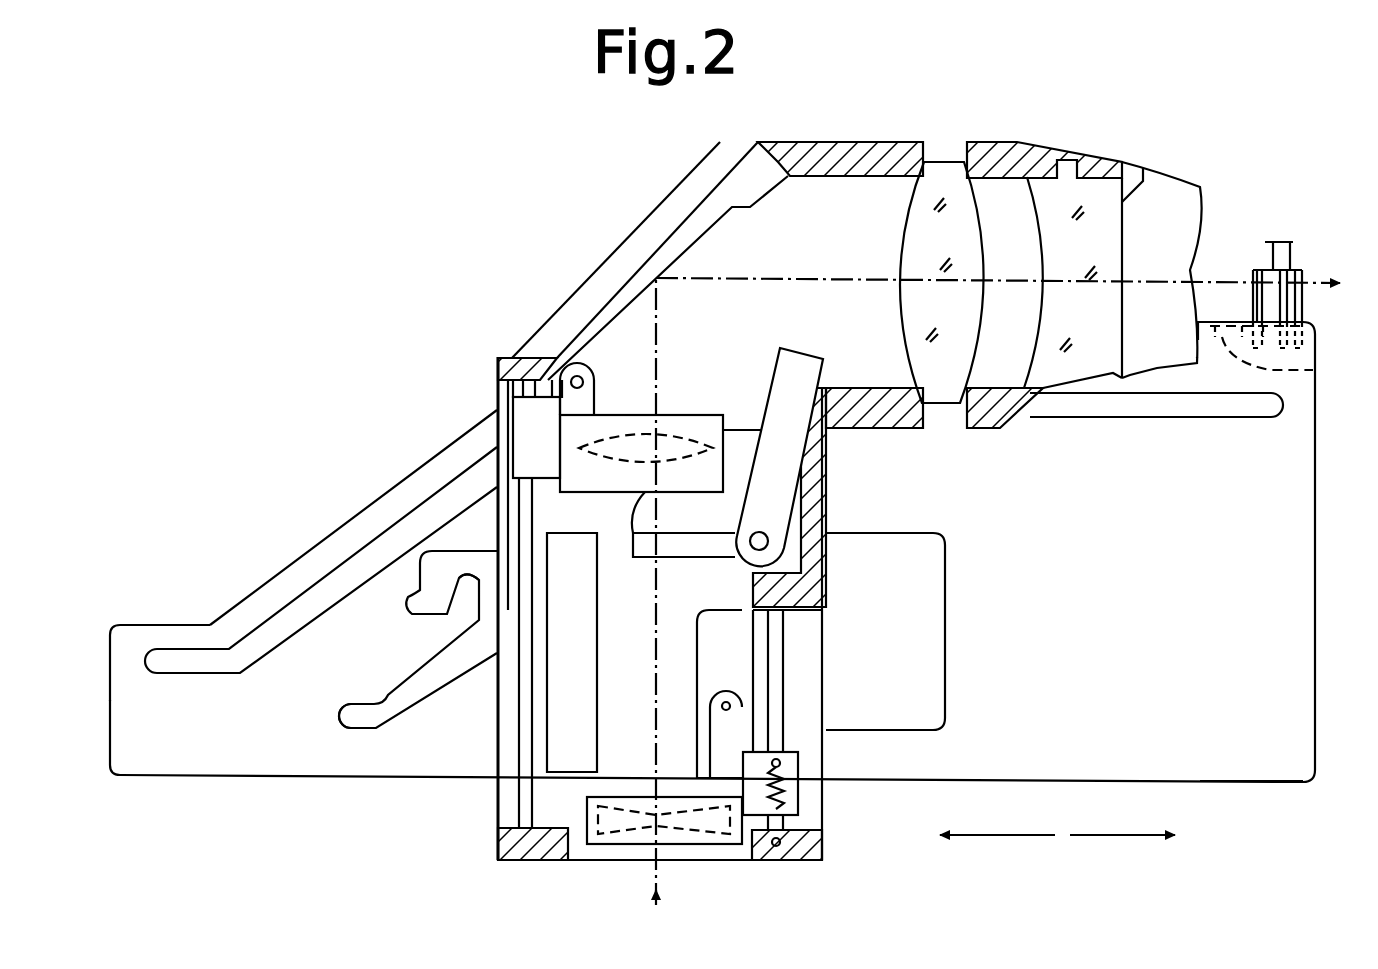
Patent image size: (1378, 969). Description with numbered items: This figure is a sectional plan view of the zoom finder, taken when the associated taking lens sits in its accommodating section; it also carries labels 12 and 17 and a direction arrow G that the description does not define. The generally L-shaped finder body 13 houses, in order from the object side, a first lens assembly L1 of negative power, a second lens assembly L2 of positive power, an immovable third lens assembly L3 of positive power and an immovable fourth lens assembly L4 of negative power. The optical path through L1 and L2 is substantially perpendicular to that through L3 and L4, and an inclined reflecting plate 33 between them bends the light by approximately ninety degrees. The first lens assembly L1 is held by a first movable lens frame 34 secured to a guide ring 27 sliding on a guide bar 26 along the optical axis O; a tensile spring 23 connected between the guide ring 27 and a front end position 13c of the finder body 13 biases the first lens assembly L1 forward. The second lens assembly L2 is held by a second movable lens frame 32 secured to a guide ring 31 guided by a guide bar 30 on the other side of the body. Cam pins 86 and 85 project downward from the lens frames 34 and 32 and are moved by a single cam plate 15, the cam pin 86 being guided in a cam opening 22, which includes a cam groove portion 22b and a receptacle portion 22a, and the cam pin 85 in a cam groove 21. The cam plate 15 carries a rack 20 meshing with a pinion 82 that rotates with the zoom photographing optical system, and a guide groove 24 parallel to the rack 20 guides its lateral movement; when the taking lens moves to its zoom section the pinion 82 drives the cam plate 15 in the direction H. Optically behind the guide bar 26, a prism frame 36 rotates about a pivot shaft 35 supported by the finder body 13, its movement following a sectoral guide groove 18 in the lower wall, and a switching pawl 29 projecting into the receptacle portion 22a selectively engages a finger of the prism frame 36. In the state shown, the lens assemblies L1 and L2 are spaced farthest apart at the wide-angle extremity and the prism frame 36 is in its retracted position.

The viewfinder unit 12 is at (400, 259).
The finder body 13 is at (847, 150).
The front end position of the finder body 13c is at (795, 852).
The cam plate 15 is at (1236, 783).
The photographing lens 17 is at (1209, 189).
The sectoral guide groove 18 is at (675, 556).
The rack 20 is at (1313, 368).
The cam groove 21 is at (275, 628).
The cam opening 22 is at (910, 641).
The receptacle portion 22a is at (412, 603).
The cam groove portion 22b is at (368, 728).
The tensile spring 23 is at (798, 820).
The guide groove 24 is at (1258, 410).
The guide bar 26 is at (785, 713).
The guide ring 27 is at (800, 778).
The switching pawl 29 is at (465, 580).
The guide bar 30 is at (523, 790).
The guide ring 31 is at (518, 425).
The second movable lens frame 32 is at (619, 416).
The reflecting plate 33 is at (694, 228).
The first movable lens frame 34 is at (620, 844).
The pivot shaft 35 is at (768, 541).
The prism frame 36 is at (786, 478).
The pinion 82 is at (1302, 268).
The cam pin 85 is at (579, 377).
The cam pin 86 is at (726, 702).
The first lens assembly L1 is at (703, 822).
The second lens assembly L2 is at (680, 430).
The third lens assembly L3 is at (940, 178).
The fourth lens assembly L4 is at (1065, 200).
The optical axis O is at (655, 690).
The direction G is at (990, 842).
The direction H is at (1116, 842).